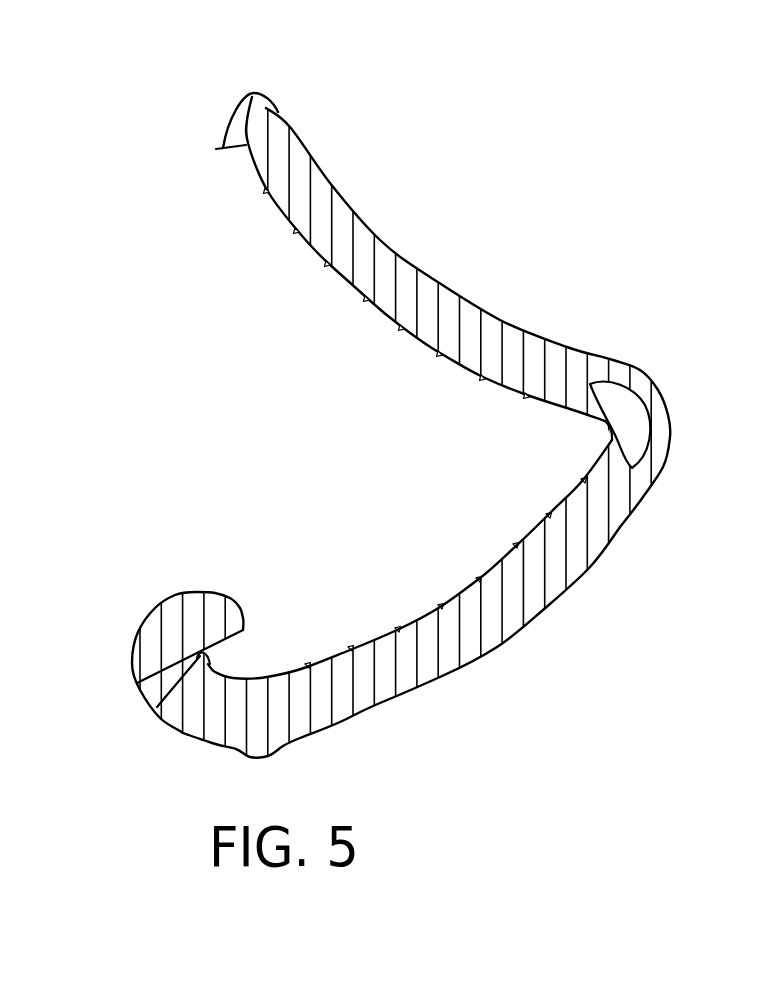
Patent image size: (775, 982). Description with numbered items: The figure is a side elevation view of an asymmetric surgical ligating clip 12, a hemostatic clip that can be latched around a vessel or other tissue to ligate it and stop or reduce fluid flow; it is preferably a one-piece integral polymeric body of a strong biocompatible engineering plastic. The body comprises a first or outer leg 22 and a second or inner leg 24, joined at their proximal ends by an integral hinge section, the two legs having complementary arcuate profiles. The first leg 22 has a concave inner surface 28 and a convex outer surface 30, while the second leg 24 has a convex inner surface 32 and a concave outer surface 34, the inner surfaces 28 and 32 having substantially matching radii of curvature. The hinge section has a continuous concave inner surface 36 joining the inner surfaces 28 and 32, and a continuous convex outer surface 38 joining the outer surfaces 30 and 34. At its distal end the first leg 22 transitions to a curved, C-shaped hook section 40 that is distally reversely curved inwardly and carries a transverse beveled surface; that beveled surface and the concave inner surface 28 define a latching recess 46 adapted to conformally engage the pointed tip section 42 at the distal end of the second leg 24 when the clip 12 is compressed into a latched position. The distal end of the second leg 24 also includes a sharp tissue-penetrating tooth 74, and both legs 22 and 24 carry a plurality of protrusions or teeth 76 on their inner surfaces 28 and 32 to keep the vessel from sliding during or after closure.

The surgical clip 12 is at (397, 394).
The first leg 22 is at (415, 599).
The second leg 24 is at (443, 382).
The concave inner surface 28 is at (420, 620).
The convex outer surface 30 is at (440, 679).
The convex inner surface 32 is at (347, 279).
The concave outer surface 34 is at (470, 302).
The concave inner surface of hinge section 36 is at (603, 426).
The convex outer surface of hinge section 38 is at (670, 423).
The hook section 40 is at (112, 680).
The tip section 42 is at (255, 78).
The latching recess 46 is at (157, 707).
The tissue-penetrating tooth 74 is at (217, 150).
The protrusions or teeth 76 is at (440, 356).